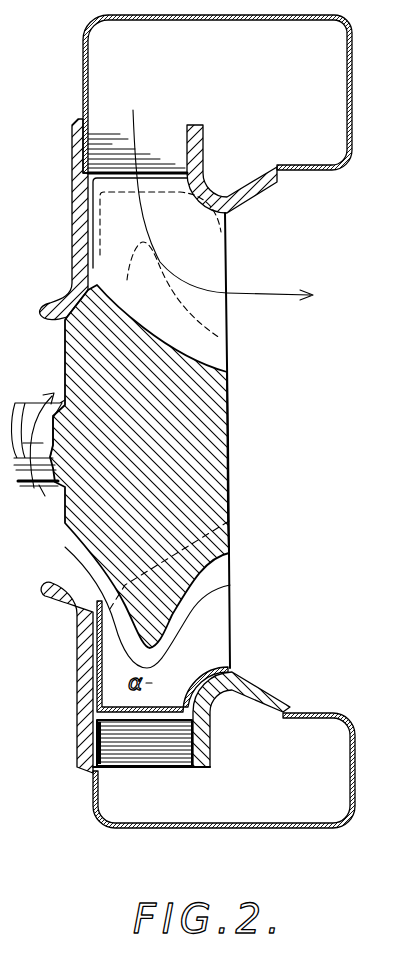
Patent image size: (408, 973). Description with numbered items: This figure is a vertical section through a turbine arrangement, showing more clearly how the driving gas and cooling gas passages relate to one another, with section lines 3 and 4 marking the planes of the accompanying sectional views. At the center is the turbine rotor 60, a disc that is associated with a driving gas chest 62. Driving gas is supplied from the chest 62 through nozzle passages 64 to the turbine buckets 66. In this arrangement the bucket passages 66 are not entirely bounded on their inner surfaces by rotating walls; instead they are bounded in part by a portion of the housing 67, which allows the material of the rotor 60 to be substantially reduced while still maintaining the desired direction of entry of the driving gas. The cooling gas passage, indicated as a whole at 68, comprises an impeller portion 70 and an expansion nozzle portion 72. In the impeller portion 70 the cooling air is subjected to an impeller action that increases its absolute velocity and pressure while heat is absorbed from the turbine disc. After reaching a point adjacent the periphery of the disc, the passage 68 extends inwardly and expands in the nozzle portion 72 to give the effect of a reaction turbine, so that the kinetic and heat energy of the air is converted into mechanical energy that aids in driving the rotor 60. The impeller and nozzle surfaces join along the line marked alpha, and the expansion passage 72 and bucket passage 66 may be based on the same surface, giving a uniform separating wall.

The turbine rotor 60 is at (210, 398).
The driving gas chest 62 is at (233, 96).
The nozzle passages 64 is at (118, 145).
The turbine buckets 66 is at (181, 262).
The housing portion 67 is at (70, 208).
The cooling gas passage 68 is at (82, 568).
The impeller portion 70 is at (115, 632).
The expansion nozzle portion 72 is at (222, 620).
The section line 3- 3 is at (55, 543).
The section line 4- 4 is at (200, 483).